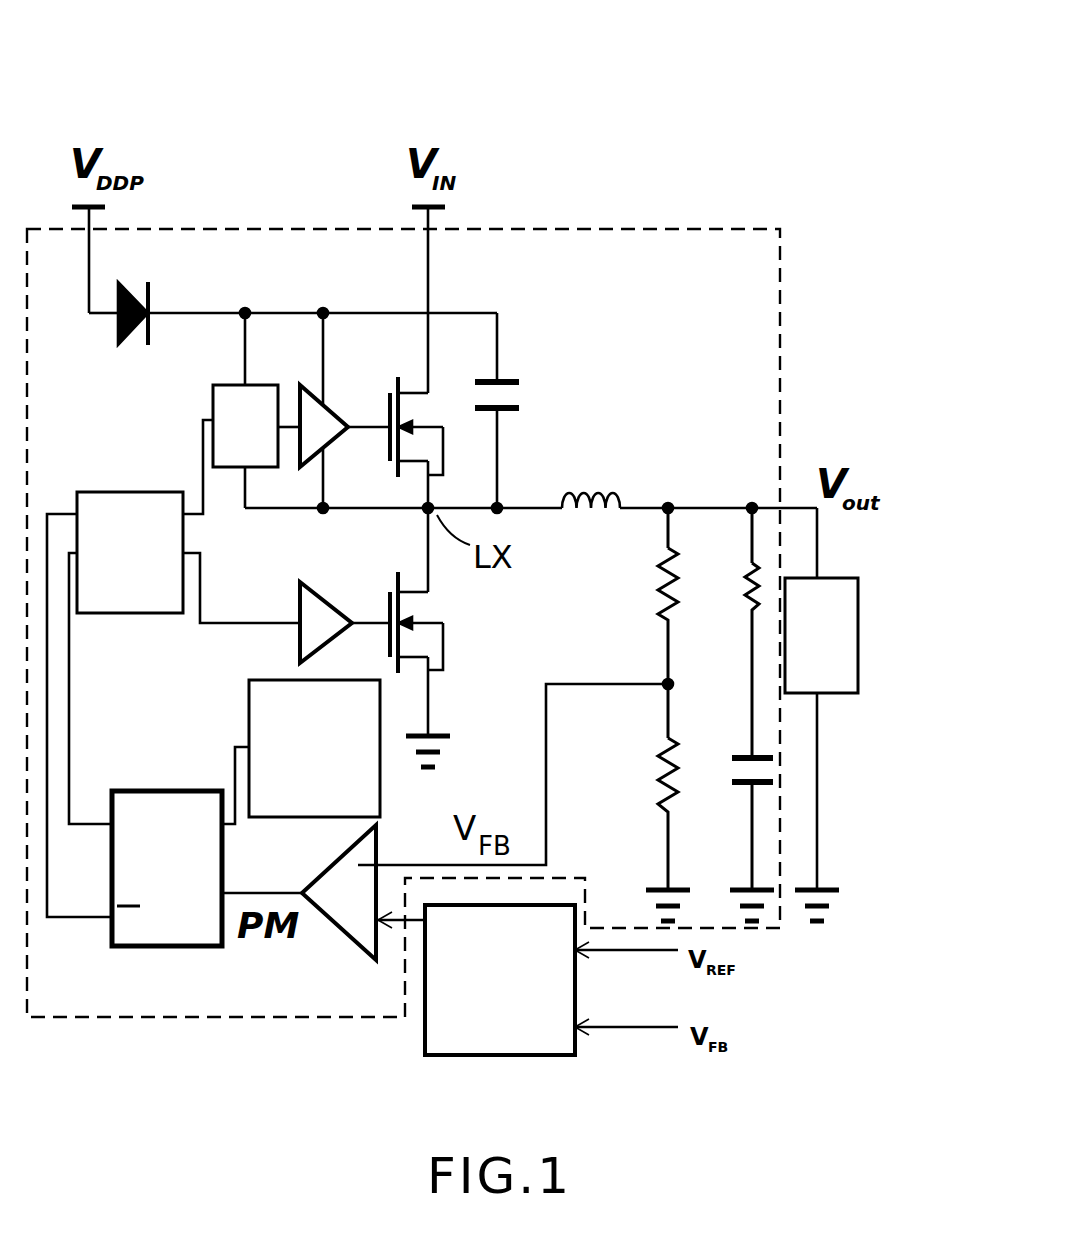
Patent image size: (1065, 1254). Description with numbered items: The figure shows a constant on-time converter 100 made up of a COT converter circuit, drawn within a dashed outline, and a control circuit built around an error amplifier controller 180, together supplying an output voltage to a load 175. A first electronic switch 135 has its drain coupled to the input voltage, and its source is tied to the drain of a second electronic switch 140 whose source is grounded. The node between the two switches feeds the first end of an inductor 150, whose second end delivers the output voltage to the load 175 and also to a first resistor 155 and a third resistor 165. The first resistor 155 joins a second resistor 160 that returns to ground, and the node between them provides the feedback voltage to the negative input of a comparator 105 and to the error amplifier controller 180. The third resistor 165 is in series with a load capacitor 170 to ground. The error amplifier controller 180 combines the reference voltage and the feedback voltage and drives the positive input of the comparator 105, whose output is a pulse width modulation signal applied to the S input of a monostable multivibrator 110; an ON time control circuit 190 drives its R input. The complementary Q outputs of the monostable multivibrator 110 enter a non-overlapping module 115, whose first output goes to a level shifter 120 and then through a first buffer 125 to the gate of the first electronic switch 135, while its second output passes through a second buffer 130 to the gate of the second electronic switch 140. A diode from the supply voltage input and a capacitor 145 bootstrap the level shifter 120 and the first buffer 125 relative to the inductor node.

The constant on-time (COT) converter 100 is at (177, 59).
The comparator 105 is at (350, 945).
The monostable multivibrator 110 is at (157, 946).
The non-overlapping module 115 is at (130, 492).
The level shifter 120 is at (213, 410).
The first buffer 125 is at (303, 386).
The second buffer 130 is at (322, 580).
The first electronic switch 135 is at (413, 393).
The second electronic switch 140 is at (420, 595).
The capacitor 145 is at (535, 395).
The inductor 150 is at (618, 483).
The first resistor 155 is at (652, 603).
The second resistor 160 is at (650, 803).
The third resistor 165 is at (735, 602).
The load capacitor 170 is at (742, 750).
The load 175 is at (858, 613).
The error amplifier controller 180 is at (532, 1057).
The ON time control circuit 190 is at (249, 700).